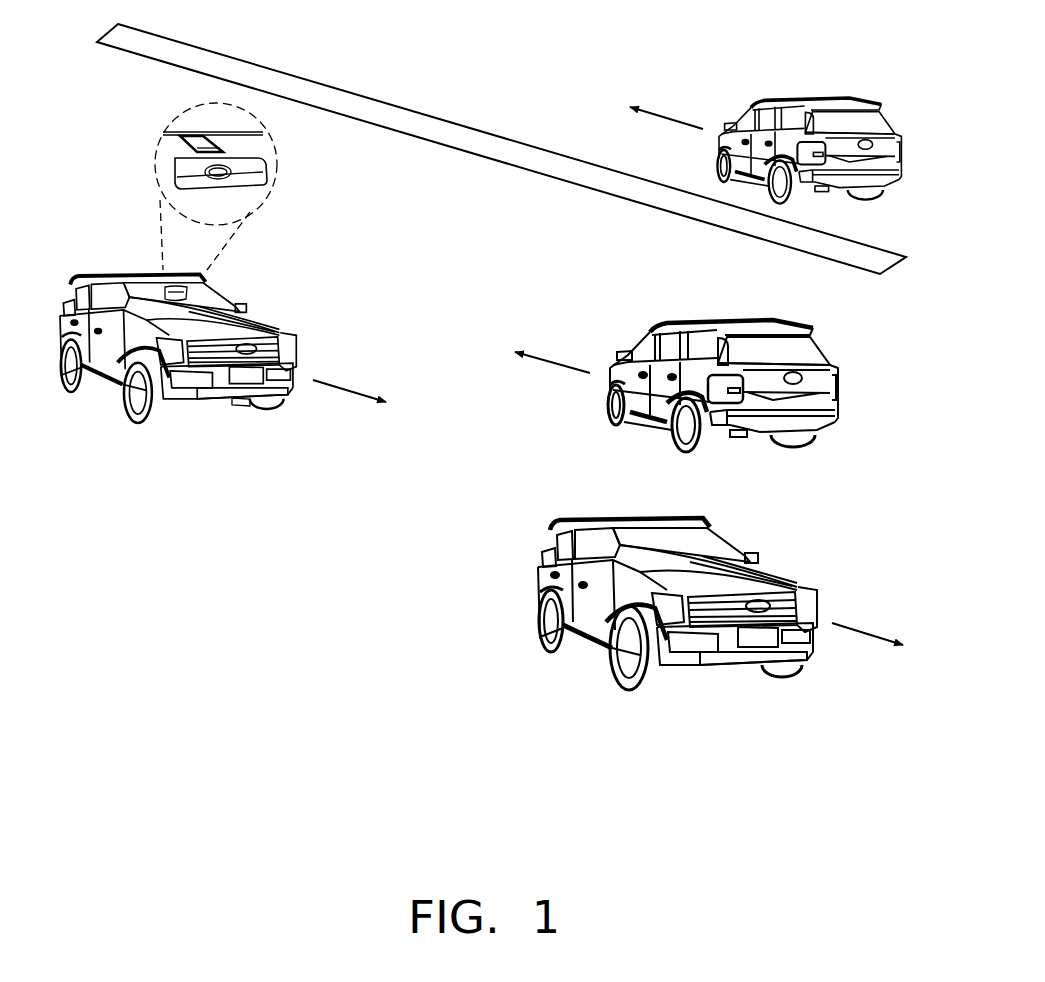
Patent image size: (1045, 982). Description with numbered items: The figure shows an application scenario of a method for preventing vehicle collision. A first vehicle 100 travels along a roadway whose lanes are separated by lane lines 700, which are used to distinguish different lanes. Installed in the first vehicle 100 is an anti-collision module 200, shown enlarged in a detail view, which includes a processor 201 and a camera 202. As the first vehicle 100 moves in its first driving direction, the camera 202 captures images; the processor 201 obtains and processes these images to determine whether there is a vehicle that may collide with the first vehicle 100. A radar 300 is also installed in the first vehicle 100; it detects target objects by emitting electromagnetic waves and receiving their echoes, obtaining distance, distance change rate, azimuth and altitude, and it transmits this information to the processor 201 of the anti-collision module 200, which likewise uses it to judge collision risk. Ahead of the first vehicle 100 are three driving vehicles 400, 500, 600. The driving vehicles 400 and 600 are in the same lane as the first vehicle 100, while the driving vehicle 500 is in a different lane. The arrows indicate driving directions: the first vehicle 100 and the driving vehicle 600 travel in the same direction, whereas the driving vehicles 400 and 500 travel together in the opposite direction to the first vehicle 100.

The first vehicle 100 is at (137, 270).
The anti-collision module 200 is at (152, 186).
The processor 201 is at (180, 137).
The camera 202 is at (187, 182).
The radar 300 is at (242, 403).
The driving vehicle 400 is at (843, 410).
The driving vehicle 500 is at (880, 108).
The driving vehicle 600 is at (540, 580).
The lane lines 700 is at (470, 128).